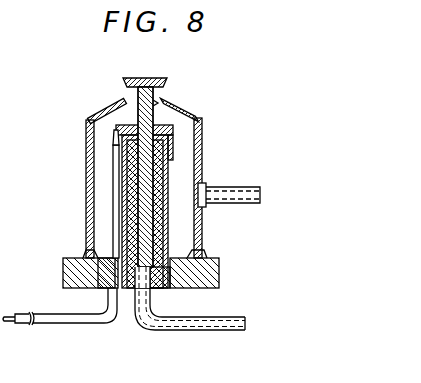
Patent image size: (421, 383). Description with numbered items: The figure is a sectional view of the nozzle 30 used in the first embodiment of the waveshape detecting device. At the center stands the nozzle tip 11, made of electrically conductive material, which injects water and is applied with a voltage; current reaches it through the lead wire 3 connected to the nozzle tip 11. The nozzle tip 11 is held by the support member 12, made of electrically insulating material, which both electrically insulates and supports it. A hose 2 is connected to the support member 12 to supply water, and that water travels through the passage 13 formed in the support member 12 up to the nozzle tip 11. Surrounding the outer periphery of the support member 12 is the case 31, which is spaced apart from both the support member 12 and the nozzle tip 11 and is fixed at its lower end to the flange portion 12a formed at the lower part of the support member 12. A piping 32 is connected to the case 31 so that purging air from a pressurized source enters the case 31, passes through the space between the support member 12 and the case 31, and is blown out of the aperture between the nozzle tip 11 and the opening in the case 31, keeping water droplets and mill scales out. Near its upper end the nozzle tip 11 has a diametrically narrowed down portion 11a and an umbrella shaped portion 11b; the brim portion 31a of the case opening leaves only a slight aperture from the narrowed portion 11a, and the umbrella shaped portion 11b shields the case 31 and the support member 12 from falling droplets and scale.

The hose 2 is at (190, 330).
The lead wire 3 is at (60, 323).
The nozzle tip 11 is at (160, 80).
The diametrically narrowed down portion 11a is at (163, 104).
The umbrella shaped portion 11b is at (123, 80).
The support member 12 is at (170, 176).
The flange portion 12a is at (173, 287).
The passage 13 is at (148, 228).
The nozzle 30 is at (78, 159).
The case 31 is at (199, 118).
The brim portion 31a is at (124, 101).
The piping 32 is at (228, 187).